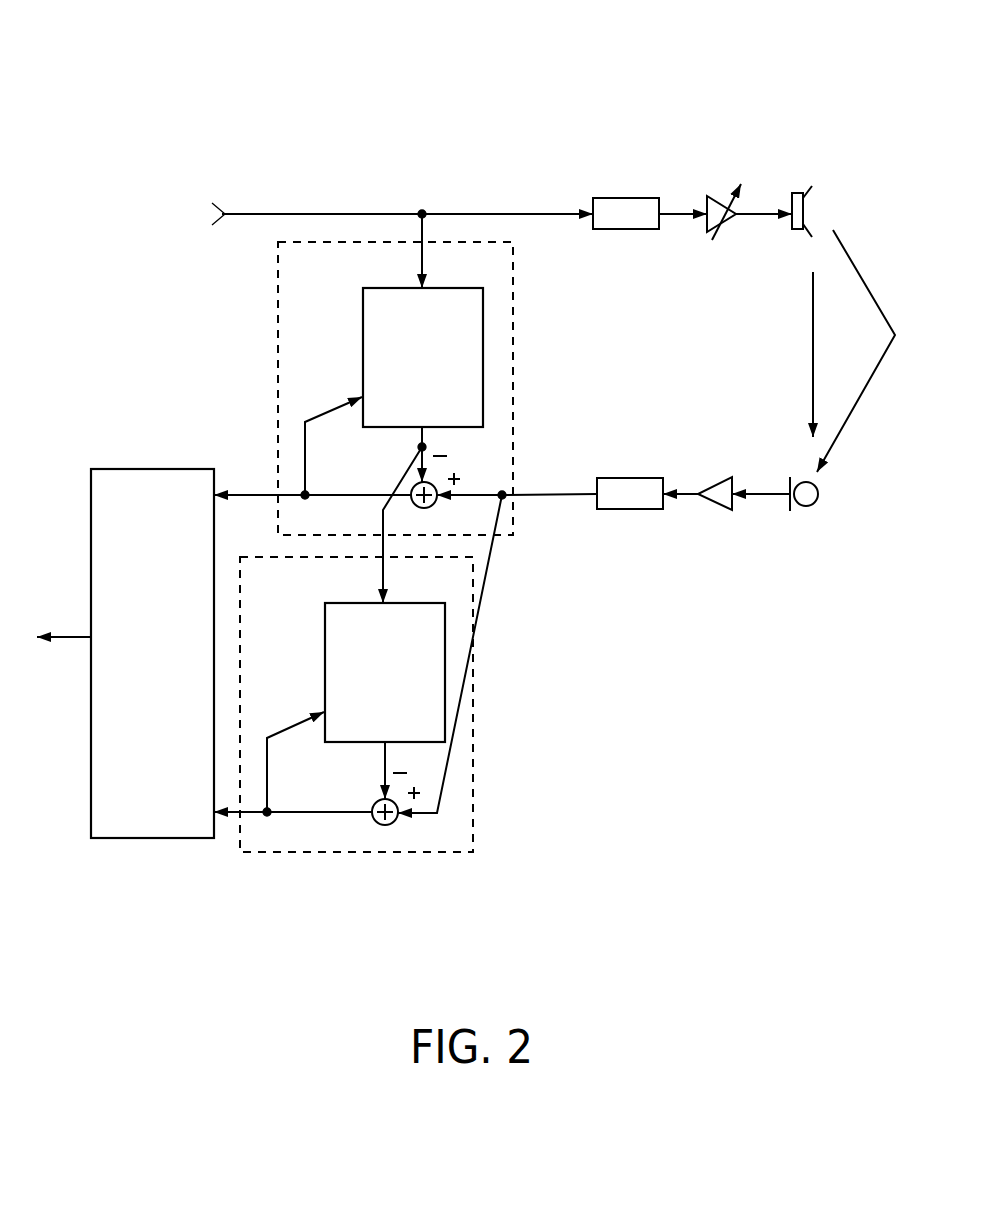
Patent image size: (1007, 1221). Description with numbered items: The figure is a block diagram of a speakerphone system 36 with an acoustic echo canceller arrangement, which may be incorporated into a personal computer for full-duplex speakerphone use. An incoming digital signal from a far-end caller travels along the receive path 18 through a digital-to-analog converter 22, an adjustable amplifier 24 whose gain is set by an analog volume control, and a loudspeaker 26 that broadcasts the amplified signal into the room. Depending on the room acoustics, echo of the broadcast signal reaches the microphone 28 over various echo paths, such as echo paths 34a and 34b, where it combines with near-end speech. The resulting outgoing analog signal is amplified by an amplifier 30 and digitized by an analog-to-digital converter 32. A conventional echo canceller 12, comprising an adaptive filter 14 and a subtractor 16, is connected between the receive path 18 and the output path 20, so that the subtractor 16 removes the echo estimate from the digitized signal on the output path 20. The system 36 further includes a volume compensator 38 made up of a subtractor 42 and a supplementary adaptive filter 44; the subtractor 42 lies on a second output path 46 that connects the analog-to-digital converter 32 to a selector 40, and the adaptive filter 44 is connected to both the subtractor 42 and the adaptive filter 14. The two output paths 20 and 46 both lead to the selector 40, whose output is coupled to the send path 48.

The echo canceller 12 is at (514, 345).
The adaptive filter 14 is at (363, 313).
The subtractor 16 is at (433, 506).
The receive path 18 is at (317, 213).
The output path 20 is at (260, 498).
The digital-to-analog (D/A) converter 22 is at (632, 198).
The adjustable amplifier 24 is at (716, 195).
The loudspeaker 26 is at (793, 195).
The microphone 28 is at (810, 507).
The amplifier 30 is at (727, 510).
The analog-to-digital (A/D) converter 32 is at (652, 510).
The echo path 34a is at (813, 370).
The echo path 34b is at (865, 393).
The speakerphone system 36 is at (760, 42).
The volume compensator 38 is at (473, 795).
The selector 40 is at (180, 468).
The subtractor 42 is at (380, 798).
The supplementary adaptive filter 44 is at (325, 633).
The output path 46 is at (236, 822).
The send path 48 is at (57, 641).